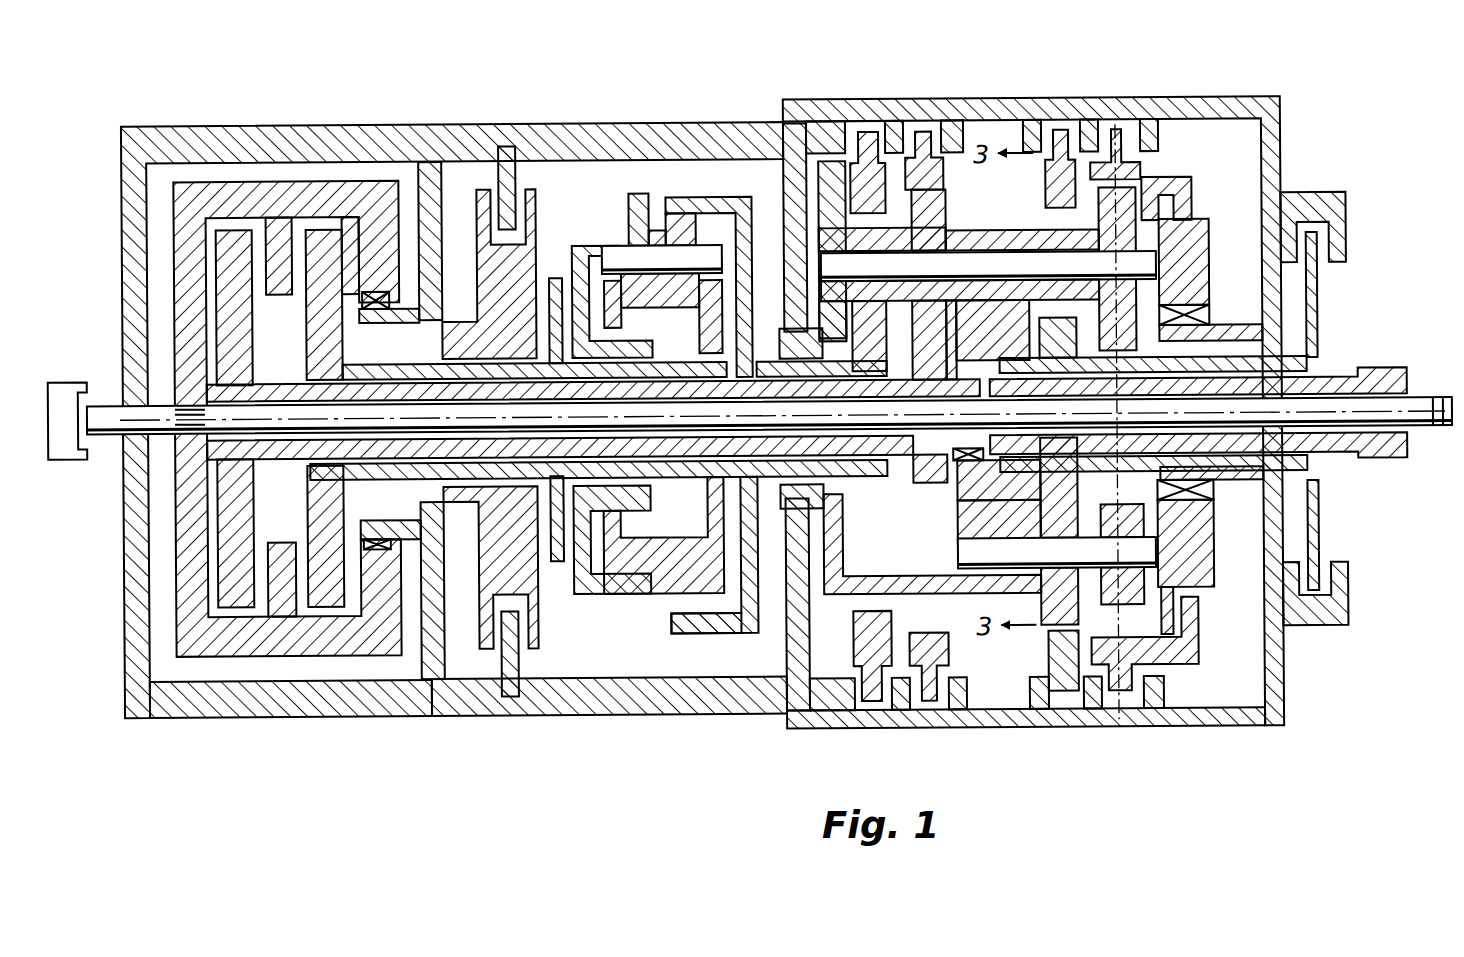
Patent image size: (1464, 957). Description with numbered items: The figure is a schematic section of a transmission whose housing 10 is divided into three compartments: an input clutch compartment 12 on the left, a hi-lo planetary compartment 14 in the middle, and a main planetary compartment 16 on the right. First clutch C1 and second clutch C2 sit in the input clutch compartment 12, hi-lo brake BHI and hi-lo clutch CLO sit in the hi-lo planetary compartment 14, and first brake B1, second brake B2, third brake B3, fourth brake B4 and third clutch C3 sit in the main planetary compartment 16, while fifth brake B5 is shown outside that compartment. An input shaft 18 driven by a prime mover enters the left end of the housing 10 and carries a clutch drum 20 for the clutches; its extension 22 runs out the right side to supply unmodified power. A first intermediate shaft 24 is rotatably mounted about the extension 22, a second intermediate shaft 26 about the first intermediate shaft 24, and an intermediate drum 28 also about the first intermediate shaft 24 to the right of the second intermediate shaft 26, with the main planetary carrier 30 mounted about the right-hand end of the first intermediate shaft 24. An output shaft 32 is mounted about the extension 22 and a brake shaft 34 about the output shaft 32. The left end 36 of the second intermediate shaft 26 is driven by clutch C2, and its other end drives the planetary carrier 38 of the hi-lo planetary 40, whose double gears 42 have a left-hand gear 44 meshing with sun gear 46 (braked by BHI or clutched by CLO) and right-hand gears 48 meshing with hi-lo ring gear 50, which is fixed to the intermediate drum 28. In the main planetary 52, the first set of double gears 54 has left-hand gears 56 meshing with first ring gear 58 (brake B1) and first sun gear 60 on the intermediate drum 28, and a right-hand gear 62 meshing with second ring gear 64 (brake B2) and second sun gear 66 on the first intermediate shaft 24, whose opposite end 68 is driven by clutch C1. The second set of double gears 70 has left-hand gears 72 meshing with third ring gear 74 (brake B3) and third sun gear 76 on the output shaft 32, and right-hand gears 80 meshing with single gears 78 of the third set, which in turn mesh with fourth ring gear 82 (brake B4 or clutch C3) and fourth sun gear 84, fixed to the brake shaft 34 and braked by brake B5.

The transmission housing 10 is at (385, 698).
The input clutch compartment 12 is at (260, 659).
The hi-lo planetary compartment 14 is at (630, 649).
The main planetary compartment 16 is at (1248, 693).
The input shaft 18 is at (62, 457).
The clutch drum 20 is at (178, 184).
The input shaft extension 22 is at (1428, 473).
The first intermediate shaft 24 is at (282, 384).
The second intermediate shaft 26 is at (393, 365).
The intermediate drum 28 is at (745, 204).
The main planetary carrier 30 is at (1020, 242).
The output shaft 32 is at (1330, 474).
The brake shaft 34 is at (1313, 351).
The left end of second intermediate shaft 36 is at (310, 305).
The hi-lo planetary carrier 38 is at (614, 256).
The hi-lo planetary 40 is at (574, 183).
The double gears 42 is at (658, 229).
The left-hand gear 44 is at (638, 229).
The sun gear 46 is at (660, 342).
The right-hand gears 48 is at (703, 234).
The hi-lo ring gear 50 is at (700, 609).
The main planetary 52 is at (1012, 132).
The double gears 54 is at (913, 216).
The left-hand gears 56 is at (800, 121).
The first ring gear 58 is at (845, 186).
The first sun gear 60 is at (868, 511).
The right-hand gear 62 is at (958, 329).
The second ring gear 64 is at (970, 127).
The second sun gear 66 is at (955, 361).
The opposite end of first intermediate shaft 68 is at (230, 254).
The double gears 70 is at (1030, 535).
The left-hand gears 72 is at (1040, 599).
The third ring gear 74 is at (1045, 662).
The third sun gear 76 is at (962, 496).
The single gears 78 is at (1172, 303).
The right-hand gears 80 is at (1212, 588).
The fourth ring gear 82 is at (1165, 181).
The fourth sun gear 84 is at (1168, 328).
The first clutch C1 is at (234, 206).
The second clutch C2 is at (322, 208).
The third clutch C3 is at (1245, 163).
The first brake B1 is at (878, 136).
The second brake B2 is at (930, 136).
The third brake B3 is at (1063, 137).
The fourth brake B4 is at (1125, 137).
The fifth brake B5 is at (1312, 229).
The hi-lo brake BHI is at (488, 177).
The hi-lo clutch CLO is at (562, 269).